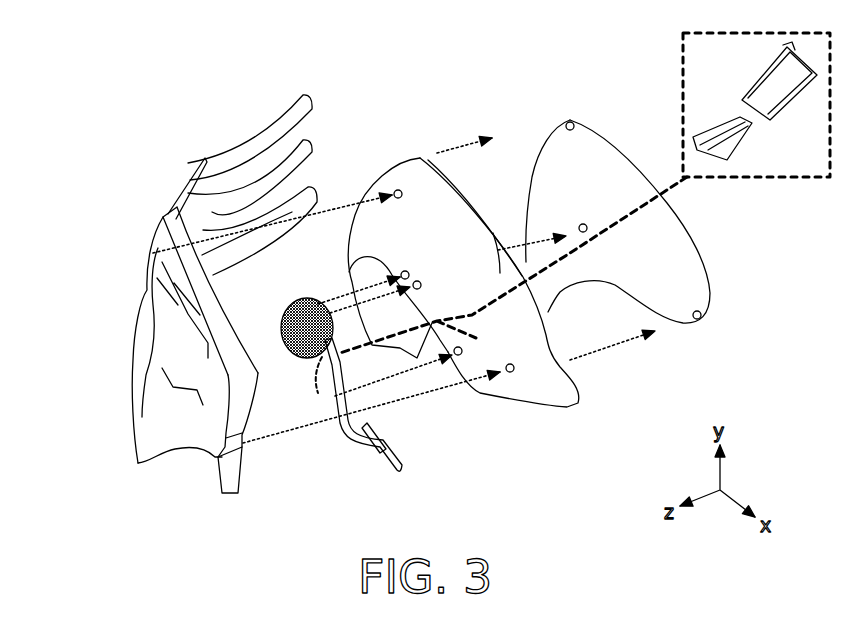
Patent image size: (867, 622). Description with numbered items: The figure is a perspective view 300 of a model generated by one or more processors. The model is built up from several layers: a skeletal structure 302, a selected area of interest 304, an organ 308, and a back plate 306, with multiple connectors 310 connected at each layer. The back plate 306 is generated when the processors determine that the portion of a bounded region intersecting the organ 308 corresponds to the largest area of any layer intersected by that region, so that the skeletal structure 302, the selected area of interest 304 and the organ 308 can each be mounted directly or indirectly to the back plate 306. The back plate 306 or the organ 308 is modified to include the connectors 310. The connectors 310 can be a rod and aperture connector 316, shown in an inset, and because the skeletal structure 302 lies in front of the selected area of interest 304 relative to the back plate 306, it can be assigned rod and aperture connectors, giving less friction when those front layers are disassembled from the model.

The perspective view 300 is at (130, 110).
The skeletal structure 302 is at (137, 327).
The selected area of interest 304 is at (292, 302).
The back plate 306 is at (540, 137).
The organ 308 is at (450, 245).
The connectors 310 is at (440, 150).
The rod and aperture connector 316 is at (667, 112).